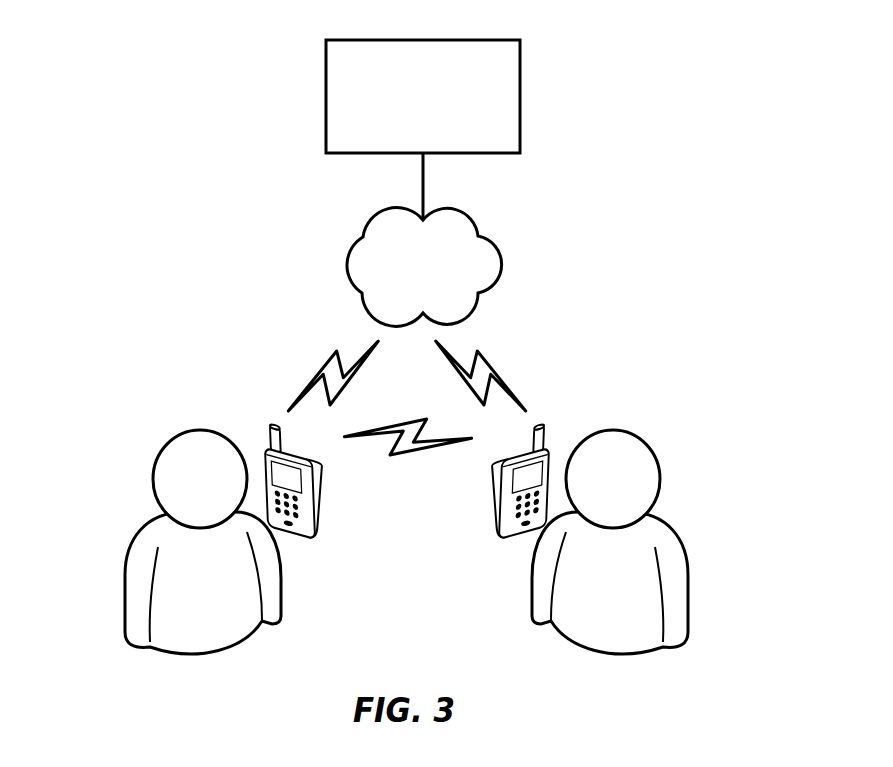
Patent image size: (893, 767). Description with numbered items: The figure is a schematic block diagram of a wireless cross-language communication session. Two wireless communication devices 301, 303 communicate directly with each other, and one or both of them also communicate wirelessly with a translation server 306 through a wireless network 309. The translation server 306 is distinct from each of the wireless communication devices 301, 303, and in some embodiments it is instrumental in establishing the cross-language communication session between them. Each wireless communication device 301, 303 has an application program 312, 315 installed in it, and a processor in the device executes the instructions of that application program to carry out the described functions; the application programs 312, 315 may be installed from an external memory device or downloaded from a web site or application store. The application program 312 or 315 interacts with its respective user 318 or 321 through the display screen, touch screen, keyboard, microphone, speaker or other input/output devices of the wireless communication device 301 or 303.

The wireless communication device 301 is at (321, 514).
The wireless communication device 303 is at (496, 517).
The translation server 306 is at (326, 98).
The wireless network 309 is at (499, 262).
The application program 312 is at (300, 530).
The application program 315 is at (513, 527).
The user 318 is at (131, 539).
The user 321 is at (683, 550).